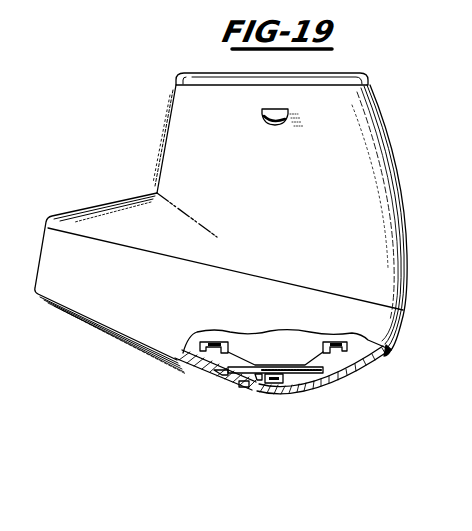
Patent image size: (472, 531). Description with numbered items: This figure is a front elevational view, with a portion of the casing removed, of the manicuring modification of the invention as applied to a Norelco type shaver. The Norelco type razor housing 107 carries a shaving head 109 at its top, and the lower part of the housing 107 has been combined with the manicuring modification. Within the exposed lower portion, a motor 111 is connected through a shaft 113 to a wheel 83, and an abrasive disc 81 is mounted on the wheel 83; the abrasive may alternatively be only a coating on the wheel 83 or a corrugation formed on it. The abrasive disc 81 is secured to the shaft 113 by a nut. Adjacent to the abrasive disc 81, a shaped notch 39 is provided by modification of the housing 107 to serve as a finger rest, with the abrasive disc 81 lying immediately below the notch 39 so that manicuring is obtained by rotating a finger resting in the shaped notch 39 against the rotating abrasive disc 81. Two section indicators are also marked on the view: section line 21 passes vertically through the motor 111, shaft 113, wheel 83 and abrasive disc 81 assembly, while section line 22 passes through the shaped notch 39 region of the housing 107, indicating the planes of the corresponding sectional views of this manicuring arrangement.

The shaving head 109 is at (364, 74).
The razor housing 107 is at (396, 208).
The motor 111 is at (318, 345).
The wheel 83 is at (230, 372).
The abrasive disc 81 is at (313, 378).
The shaft 113 is at (283, 394).
The shaped notch 39 is at (238, 387).
The section line 21 is at (273, 508).
The section line 22 is at (240, 468).